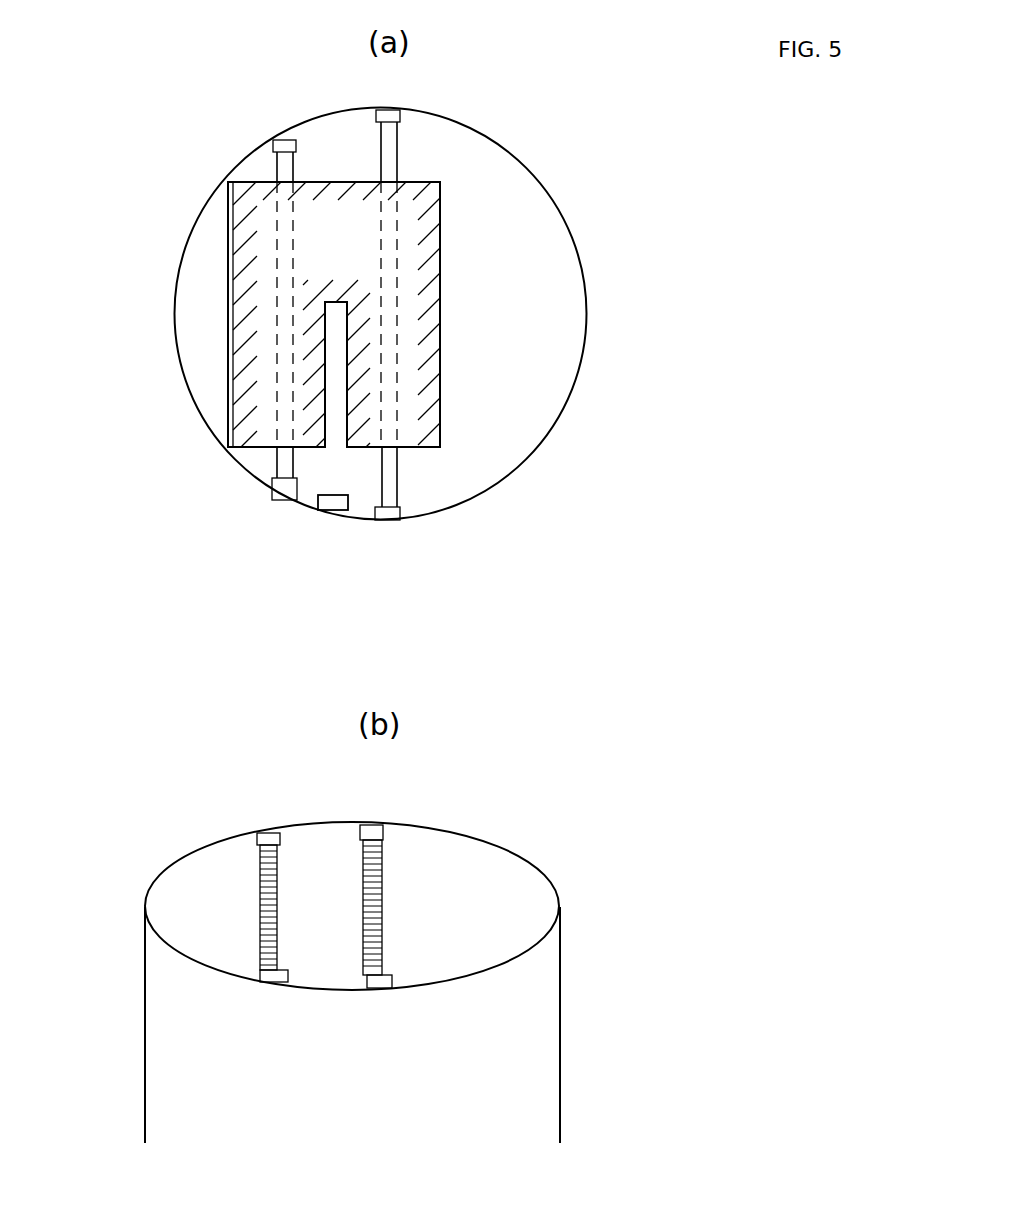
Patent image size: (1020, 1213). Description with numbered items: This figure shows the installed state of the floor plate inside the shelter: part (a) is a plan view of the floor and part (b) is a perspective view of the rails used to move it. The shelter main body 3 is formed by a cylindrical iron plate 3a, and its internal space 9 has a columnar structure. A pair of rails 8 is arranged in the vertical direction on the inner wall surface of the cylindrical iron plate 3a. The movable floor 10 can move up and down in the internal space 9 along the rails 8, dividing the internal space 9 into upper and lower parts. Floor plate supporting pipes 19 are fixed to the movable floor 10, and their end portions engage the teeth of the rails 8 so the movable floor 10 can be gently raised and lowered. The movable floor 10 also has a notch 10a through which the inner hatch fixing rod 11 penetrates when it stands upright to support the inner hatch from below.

The shelter main body 3 is at (642, 147).
The cylindrical iron plate 3a is at (577, 242).
The internal space 9 is at (500, 175).
The movable floor 10 is at (242, 242).
The notch 10a is at (335, 432).
The inner hatch fixing rod 11 is at (333, 500).
The floor plate supporting pipe 19 is at (385, 148).
The rail 8 is at (260, 870).